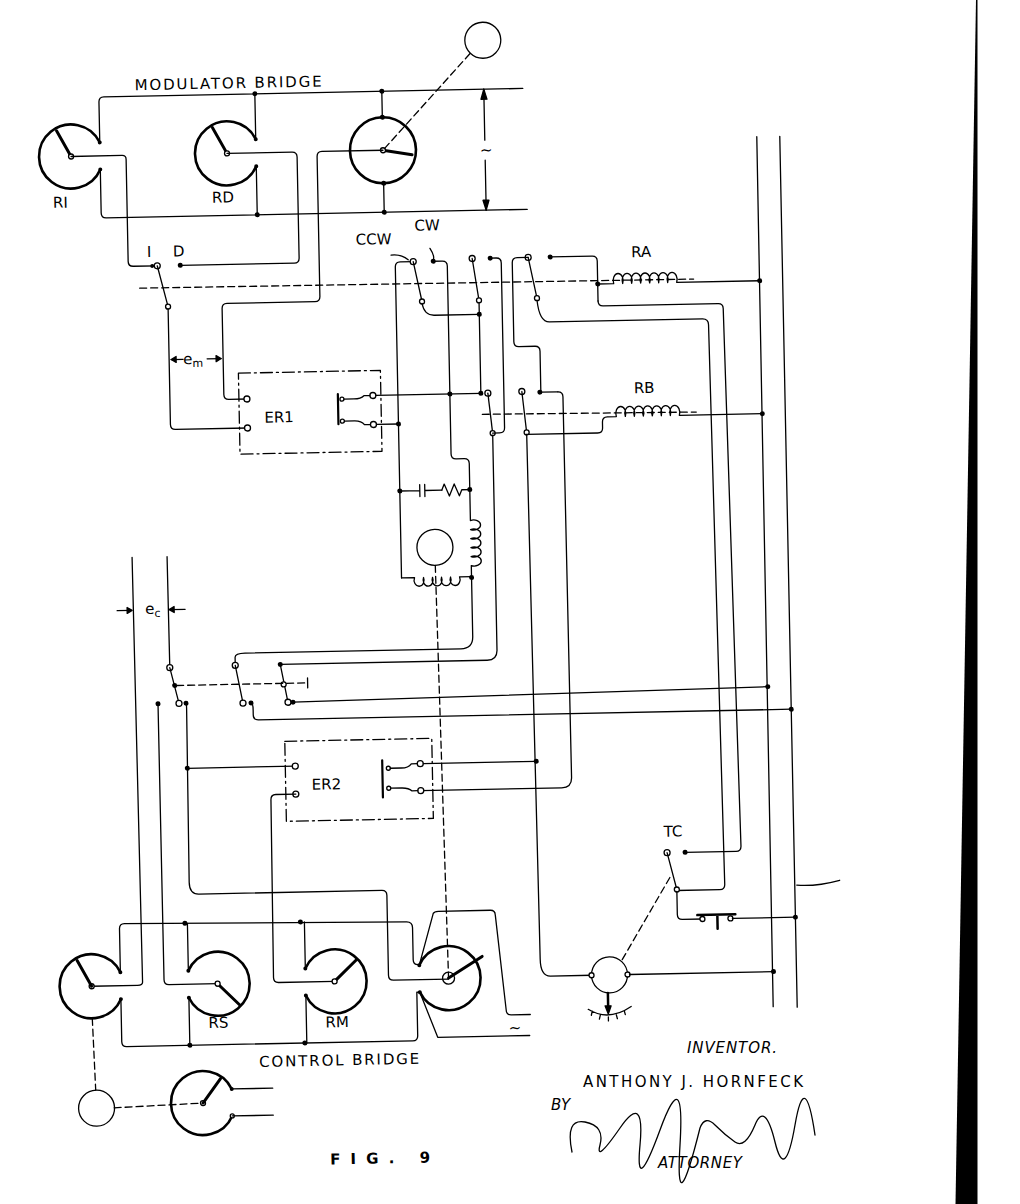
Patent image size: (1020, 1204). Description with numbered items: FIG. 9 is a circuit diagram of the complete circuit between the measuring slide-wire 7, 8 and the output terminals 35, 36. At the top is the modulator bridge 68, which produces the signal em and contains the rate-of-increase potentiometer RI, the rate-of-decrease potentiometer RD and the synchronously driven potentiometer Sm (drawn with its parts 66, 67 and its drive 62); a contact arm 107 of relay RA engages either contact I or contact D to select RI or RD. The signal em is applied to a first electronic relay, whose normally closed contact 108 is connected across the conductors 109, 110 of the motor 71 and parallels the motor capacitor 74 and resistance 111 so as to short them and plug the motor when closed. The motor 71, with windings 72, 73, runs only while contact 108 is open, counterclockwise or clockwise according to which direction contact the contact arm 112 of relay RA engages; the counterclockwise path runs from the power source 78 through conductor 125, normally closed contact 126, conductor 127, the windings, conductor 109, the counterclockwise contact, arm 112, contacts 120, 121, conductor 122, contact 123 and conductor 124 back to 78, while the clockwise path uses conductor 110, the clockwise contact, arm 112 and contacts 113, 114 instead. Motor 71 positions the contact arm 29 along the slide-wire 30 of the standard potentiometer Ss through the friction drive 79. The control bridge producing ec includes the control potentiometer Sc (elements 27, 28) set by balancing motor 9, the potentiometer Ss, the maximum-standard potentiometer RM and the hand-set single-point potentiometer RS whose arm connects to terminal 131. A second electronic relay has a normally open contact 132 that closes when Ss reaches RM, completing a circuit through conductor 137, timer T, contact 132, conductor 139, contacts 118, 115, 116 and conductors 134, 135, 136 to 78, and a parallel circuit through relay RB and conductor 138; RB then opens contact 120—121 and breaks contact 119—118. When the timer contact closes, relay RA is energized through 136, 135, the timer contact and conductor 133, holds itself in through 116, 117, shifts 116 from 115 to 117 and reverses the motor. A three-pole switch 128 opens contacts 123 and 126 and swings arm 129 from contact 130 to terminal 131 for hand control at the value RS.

The measuring slide-wire 7 is at (193, 1129).
The measuring potentiometer contact arm 8 is at (205, 1087).
The balancing motor 9 is at (89, 1118).
The wiper of control potentiometer Sc 27 is at (76, 966).
The control potentiometer Sc 28 is at (73, 1010).
The contact arm 29 is at (464, 965).
The slide-wire 30 is at (447, 945).
The output terminal 35 is at (117, 761).
The output terminal 36 is at (169, 599).
The motor M1 62 is at (513, 43).
The wiper of potentiometer Sm 66 is at (400, 151).
The potentiometer Sm 67 is at (372, 122).
The modulator bridge 68 is at (323, 124).
The motor 71 is at (386, 546).
The motor winding 72 is at (472, 522).
The motor winding 73 is at (424, 584).
The motor capacitor 74 is at (423, 484).
The power source 78 is at (789, 168).
The friction drive 79 is at (441, 983).
The contact arm 107 is at (167, 286).
The normally closed contact 108 is at (342, 421).
The motor conductor 109 is at (402, 470).
The motor conductor 110 is at (453, 428).
The resistance 111 is at (459, 486).
The contact arm 112 is at (425, 308).
The contact 113 is at (476, 256).
The contact 114 is at (497, 257).
The contact 115 is at (533, 256).
The movable contact 116 is at (546, 301).
The contact 117 is at (557, 257).
The contact 118 is at (544, 392).
The contact 119 is at (524, 390).
The contact 120 is at (483, 393).
The contact 121 is at (387, 540).
The conductor 122 is at (374, 660).
The contact 123 is at (291, 688).
The conductor 124 is at (624, 694).
The conductor 125 is at (631, 715).
The normally closed contact 126 is at (515, 717).
The conductor 127 is at (352, 646).
The three-pole switch 128 is at (217, 662).
The switch arm 129 is at (178, 686).
The contact 130 is at (186, 702).
The terminal 131 is at (156, 695).
The output contact 132 is at (379, 794).
The conductor 133 is at (735, 858).
The conductor 134 is at (717, 584).
The conductor 135 is at (673, 926).
The conductor 136 is at (721, 918).
The conductor 137 is at (678, 978).
The conductor 138 is at (532, 672).
The conductor 139 is at (567, 641).